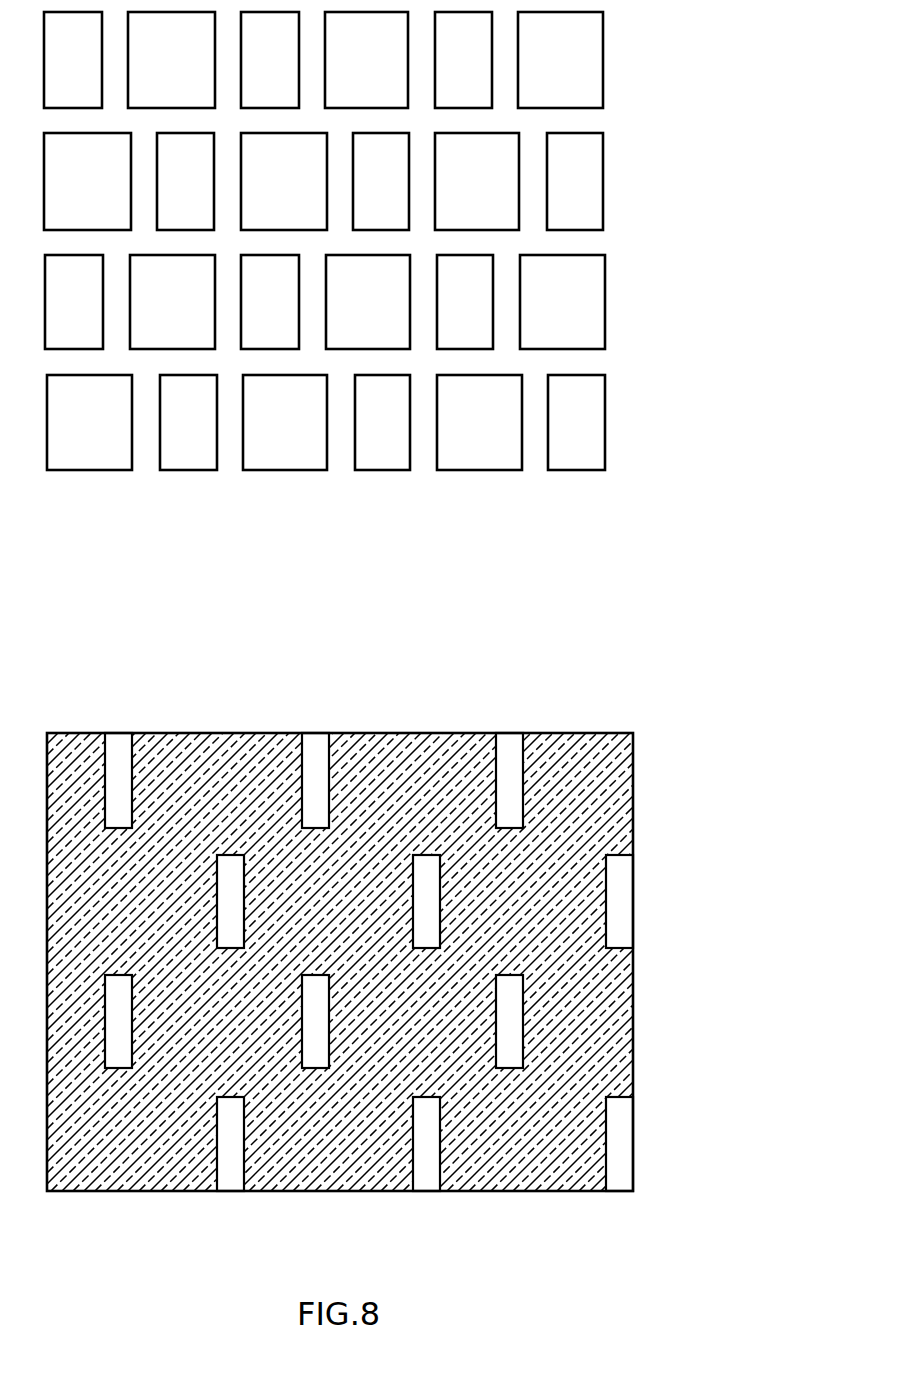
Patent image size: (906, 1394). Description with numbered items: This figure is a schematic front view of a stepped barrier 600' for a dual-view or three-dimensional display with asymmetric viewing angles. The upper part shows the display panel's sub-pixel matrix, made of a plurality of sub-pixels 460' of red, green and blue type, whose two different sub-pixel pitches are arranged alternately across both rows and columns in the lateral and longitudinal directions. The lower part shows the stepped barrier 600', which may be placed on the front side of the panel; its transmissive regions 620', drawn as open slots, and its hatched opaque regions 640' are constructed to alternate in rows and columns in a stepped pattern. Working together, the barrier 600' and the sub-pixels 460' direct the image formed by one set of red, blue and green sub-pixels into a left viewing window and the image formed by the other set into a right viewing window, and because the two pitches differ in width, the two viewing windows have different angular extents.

The sub-pixels 460' is at (390, 240).
The stepped barrier 600' is at (402, 928).
The transmissive regions 620' is at (351, 928).
The opaque regions 640' is at (340, 928).